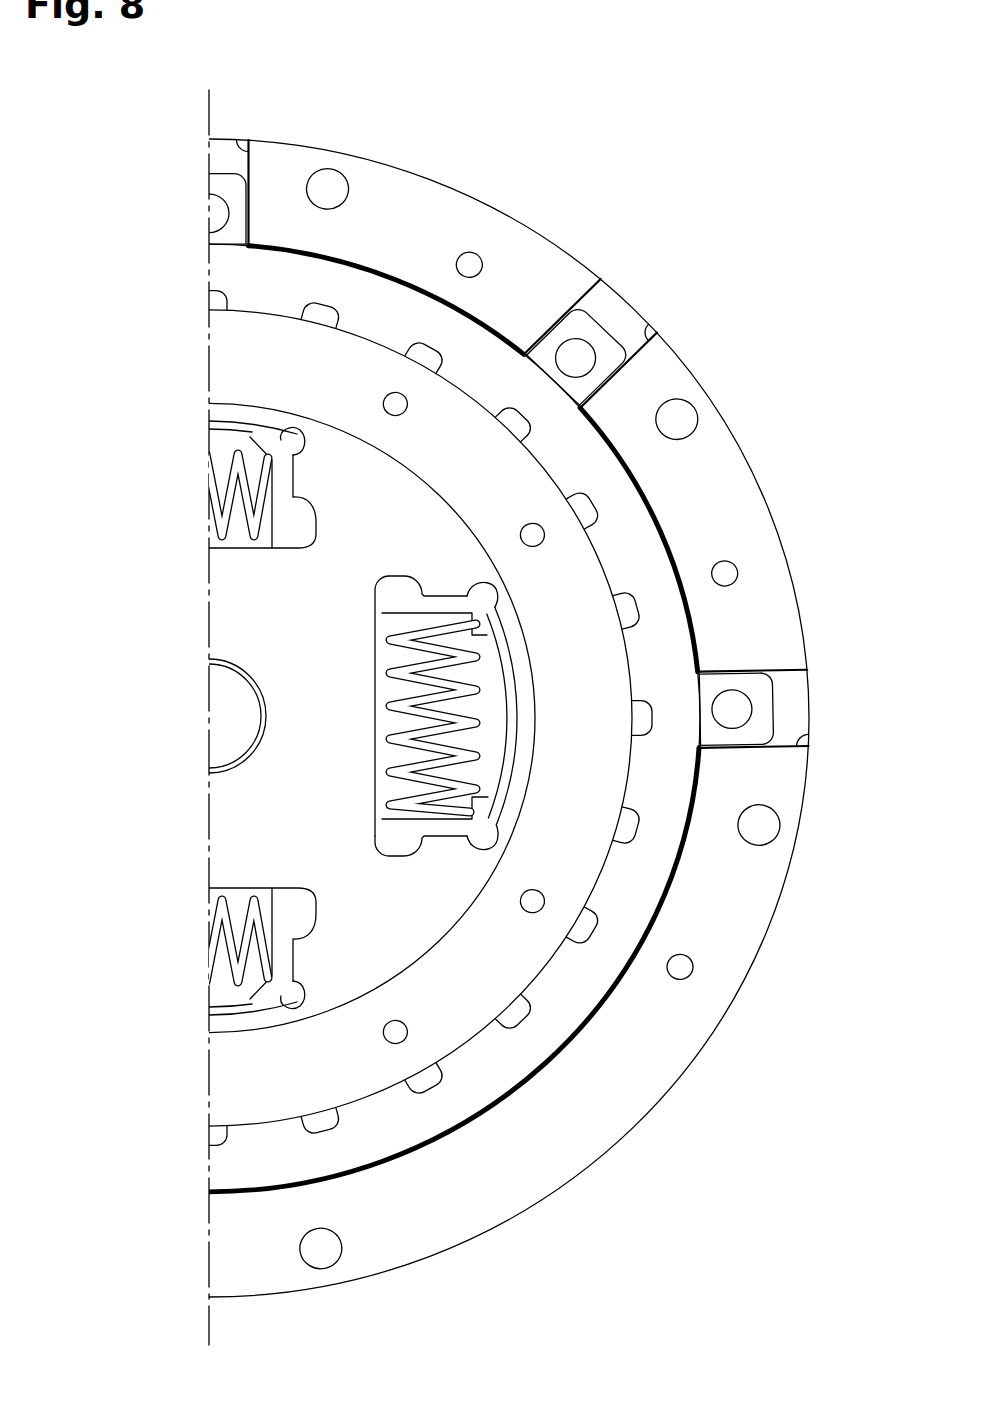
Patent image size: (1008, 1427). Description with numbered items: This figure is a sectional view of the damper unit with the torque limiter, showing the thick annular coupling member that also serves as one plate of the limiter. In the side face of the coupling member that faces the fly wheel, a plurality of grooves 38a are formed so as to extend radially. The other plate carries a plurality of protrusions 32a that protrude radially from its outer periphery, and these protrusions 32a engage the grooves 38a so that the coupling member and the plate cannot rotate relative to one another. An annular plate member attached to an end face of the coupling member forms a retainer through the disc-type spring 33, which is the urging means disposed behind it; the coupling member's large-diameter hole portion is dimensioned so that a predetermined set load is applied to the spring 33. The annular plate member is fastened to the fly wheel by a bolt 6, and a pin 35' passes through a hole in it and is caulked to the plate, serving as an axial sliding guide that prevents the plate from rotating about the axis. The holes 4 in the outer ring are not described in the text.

The rivet hole 4 is at (569, 744).
The bolt 6 is at (596, 642).
The protrusion 32a is at (514, 460).
The disc-type spring 33 is at (473, 719).
The pin 35' is at (478, 495).
The groove 38a is at (531, 420).